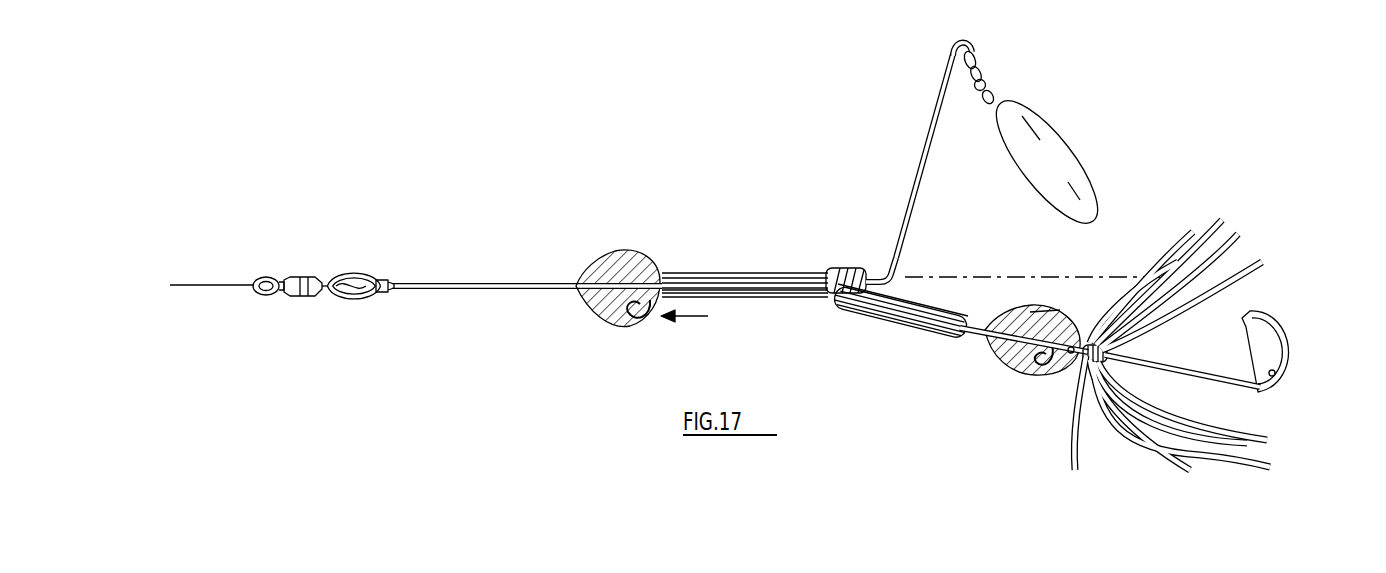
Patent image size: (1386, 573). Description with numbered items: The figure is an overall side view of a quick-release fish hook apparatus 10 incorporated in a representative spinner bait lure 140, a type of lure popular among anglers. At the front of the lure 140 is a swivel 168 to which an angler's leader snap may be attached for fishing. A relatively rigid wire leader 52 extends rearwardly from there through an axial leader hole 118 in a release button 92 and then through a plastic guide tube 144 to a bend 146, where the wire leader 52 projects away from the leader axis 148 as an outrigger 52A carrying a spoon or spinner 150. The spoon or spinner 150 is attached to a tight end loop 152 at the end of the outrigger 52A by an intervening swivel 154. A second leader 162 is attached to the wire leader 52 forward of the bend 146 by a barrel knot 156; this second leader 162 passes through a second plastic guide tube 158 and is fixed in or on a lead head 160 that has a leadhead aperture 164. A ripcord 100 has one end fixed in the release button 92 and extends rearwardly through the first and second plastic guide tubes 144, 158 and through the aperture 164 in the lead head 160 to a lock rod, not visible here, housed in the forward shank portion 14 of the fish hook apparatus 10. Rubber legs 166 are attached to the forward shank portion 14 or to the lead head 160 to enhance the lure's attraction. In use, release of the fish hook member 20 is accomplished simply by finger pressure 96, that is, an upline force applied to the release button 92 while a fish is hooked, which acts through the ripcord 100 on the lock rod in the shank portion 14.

The spinner bait lure 140 is at (347, 178).
The swivel 168 is at (302, 297).
The wire leader 52 is at (456, 292).
The release button 92 is at (621, 262).
The axial leader hole 118 is at (604, 312).
The finger pressure 96 is at (688, 316).
The plastic guide tube 144 is at (739, 272).
The ripcord 100 is at (770, 300).
The barrel knot 156 is at (840, 271).
The bend 146 is at (883, 268).
The outrigger 52A is at (913, 161).
The tight end loop 152 is at (940, 45).
The swivel 154 is at (986, 80).
The spoon or spinner 150 is at (1067, 172).
The leader axis 148 is at (990, 275).
The second plastic guide tube 158 is at (908, 292).
The second leader 162 is at (928, 332).
The lead head 160 is at (1012, 368).
The leadhead aperture 164 is at (1036, 318).
The rubber legs 166 is at (1175, 240).
The forward shank portion 14 is at (1195, 370).
The quick-release fish hook apparatus 10 is at (1300, 314).
The fish hook member 20 is at (1272, 388).